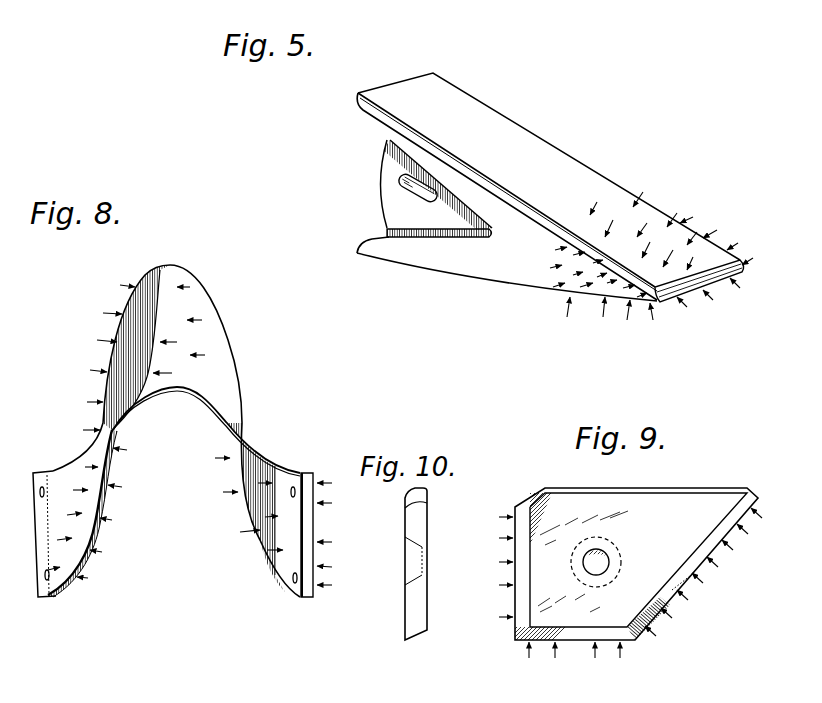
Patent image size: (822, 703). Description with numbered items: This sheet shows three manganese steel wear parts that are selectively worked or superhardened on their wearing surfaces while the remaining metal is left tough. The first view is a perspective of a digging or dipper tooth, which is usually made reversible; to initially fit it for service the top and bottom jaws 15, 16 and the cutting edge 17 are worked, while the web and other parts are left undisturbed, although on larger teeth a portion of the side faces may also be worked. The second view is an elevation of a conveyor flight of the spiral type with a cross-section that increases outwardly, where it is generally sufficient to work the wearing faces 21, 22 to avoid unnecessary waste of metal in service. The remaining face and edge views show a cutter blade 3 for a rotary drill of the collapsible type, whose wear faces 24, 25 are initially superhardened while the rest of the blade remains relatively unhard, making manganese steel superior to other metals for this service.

In FIG. 5, the top jaw 15 is at (549, 148).
In FIG. 5, the bottom jaw 16 is at (506, 283).
In FIG. 5, the cutting edge 17 is at (673, 298).
In FIG. 8, the wearing face 21 is at (317, 527).
In FIG. 8, the wearing face 22 is at (272, 472).
In FIG. 9, the angle plate 3 is at (610, 590).
In FIG. 9, the wear face 24 is at (582, 633).
In FIG. 9, the wear face 25 is at (688, 578).